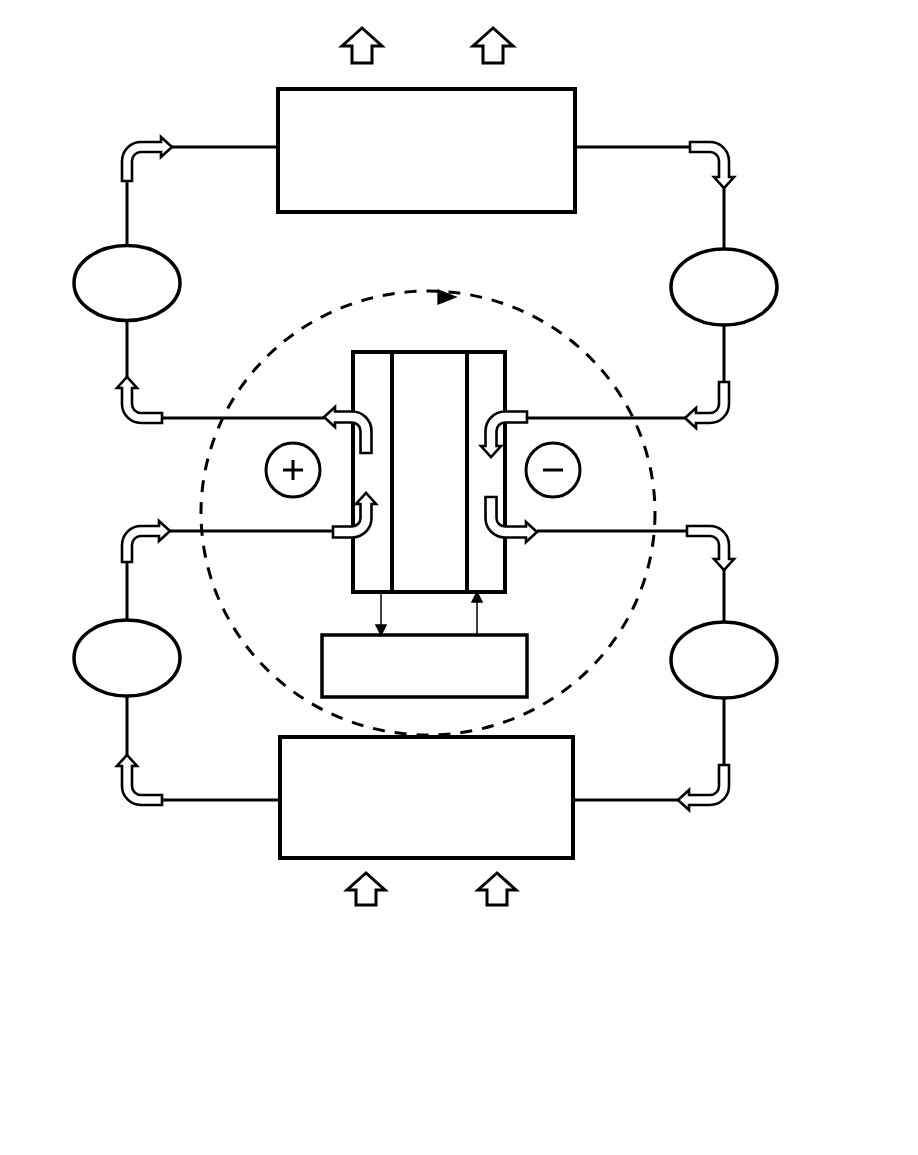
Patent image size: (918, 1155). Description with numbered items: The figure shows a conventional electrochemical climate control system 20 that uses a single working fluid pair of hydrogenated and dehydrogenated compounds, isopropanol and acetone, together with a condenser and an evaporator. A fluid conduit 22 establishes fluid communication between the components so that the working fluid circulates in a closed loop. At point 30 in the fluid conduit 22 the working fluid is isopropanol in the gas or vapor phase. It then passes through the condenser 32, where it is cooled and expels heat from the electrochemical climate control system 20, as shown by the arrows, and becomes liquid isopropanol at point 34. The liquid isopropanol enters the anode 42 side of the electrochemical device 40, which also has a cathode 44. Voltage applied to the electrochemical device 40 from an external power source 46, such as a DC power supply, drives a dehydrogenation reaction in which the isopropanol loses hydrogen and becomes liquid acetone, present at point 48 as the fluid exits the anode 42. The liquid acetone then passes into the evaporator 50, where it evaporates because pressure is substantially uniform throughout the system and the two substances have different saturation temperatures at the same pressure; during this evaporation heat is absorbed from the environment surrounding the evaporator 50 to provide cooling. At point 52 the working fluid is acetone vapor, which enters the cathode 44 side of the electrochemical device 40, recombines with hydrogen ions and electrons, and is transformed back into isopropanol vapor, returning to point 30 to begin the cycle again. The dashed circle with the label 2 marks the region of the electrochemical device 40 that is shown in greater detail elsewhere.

The electrochemical climate control system 20 is at (152, 57).
The fluid conduit 22 is at (622, 147).
The point in the fluid conduit 30 is at (110, 297).
The condenser 32 is at (415, 154).
The point in the fluid conduit 34 is at (707, 301).
The electrochemical device 40 is at (424, 410).
The anode 42 is at (488, 383).
The cathode 44 is at (372, 378).
The external power source 46 is at (405, 674).
The point in the fluid conduit 48 is at (707, 674).
The evaporator 50 is at (405, 814).
The point in the fluid conduit 52 is at (110, 672).
The detail region shown in FIG. 2 is at (428, 509).